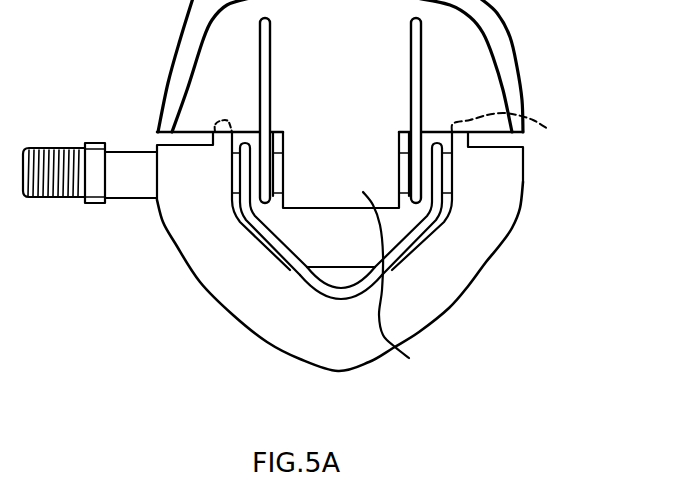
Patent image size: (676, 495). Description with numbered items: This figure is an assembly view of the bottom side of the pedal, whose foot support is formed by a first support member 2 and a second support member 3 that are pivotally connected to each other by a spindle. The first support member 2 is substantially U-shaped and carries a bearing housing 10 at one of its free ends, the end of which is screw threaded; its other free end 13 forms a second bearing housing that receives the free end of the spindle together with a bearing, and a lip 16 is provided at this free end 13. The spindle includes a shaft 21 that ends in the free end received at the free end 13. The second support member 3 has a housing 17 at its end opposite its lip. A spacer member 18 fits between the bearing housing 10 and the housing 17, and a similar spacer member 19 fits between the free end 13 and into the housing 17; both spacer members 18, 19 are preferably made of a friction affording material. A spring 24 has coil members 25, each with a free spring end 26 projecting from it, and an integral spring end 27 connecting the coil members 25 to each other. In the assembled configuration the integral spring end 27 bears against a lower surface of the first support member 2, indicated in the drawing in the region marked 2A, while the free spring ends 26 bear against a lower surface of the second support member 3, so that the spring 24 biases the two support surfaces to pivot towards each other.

The first support member 2 is at (446, 307).
The pedal body portion 2A is at (313, 312).
The second support member 3 is at (507, 68).
The bearing housing 10 is at (153, 200).
The free end 13 is at (500, 222).
The lip 16 is at (392, 133).
The housing 17 is at (399, 281).
The spacer member 18 is at (230, 178).
The spacer member 19 is at (443, 182).
The shaft 21 is at (125, 167).
The spring 24 is at (292, 269).
The coil members 25 is at (455, 147).
The free spring end 26 is at (423, 98).
The integral spring end 27 is at (338, 300).